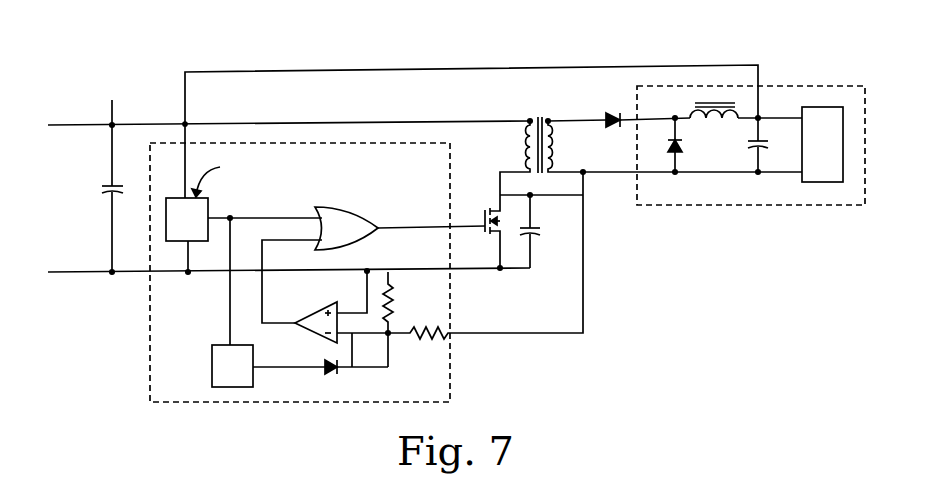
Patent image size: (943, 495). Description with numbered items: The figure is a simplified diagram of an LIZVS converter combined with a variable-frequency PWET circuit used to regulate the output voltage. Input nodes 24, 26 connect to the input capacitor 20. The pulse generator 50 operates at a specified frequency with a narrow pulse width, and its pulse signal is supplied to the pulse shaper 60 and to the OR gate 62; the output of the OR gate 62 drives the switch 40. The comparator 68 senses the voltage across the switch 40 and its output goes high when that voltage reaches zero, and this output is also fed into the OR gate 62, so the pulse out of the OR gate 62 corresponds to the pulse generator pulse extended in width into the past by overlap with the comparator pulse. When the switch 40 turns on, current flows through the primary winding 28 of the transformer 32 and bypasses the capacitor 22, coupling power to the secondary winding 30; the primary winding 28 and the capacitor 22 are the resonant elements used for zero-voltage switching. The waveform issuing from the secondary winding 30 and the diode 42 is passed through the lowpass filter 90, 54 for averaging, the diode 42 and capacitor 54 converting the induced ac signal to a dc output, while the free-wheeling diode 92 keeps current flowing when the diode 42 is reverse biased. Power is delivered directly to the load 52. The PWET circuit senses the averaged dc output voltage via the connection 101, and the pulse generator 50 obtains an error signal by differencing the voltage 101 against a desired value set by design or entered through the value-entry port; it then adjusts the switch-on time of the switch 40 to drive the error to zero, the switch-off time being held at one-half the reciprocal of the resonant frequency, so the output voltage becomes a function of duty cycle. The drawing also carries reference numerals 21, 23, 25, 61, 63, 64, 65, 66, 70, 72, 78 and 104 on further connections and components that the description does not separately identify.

The input capacitor 20 is at (97, 190).
The input node 24 is at (112, 100).
The input node 26 is at (112, 271).
The connection 101 is at (300, 69).
The pulse generator 50 is at (248, 211).
The control output line 64 is at (268, 216).
The OR gate 62 is at (345, 215).
The gate drive line 23 is at (432, 229).
The pulse shaper 60 is at (232, 302).
The comparator output line 65 is at (276, 324).
The comparator 68 is at (323, 318).
The comparator input 61 is at (362, 311).
The node 63 is at (353, 340).
The diode 66 is at (330, 366).
The resistor 70 is at (398, 293).
The current sense resistor 72 is at (427, 340).
The control circuit 78 is at (455, 388).
The transformer 32 is at (538, 116).
The primary winding 28 is at (526, 152).
The secondary winding 30 is at (552, 152).
The diode 42 is at (614, 112).
The switching node 21 is at (499, 194).
The switch 40 is at (484, 225).
The capacitor 22 is at (542, 230).
The source node 25 is at (500, 270).
The output filter stage 104 is at (790, 207).
The free-wheeling diode 92 is at (668, 147).
The lowpass filter 90 is at (714, 121).
The capacitor 54 is at (770, 143).
The load 52 is at (822, 144).